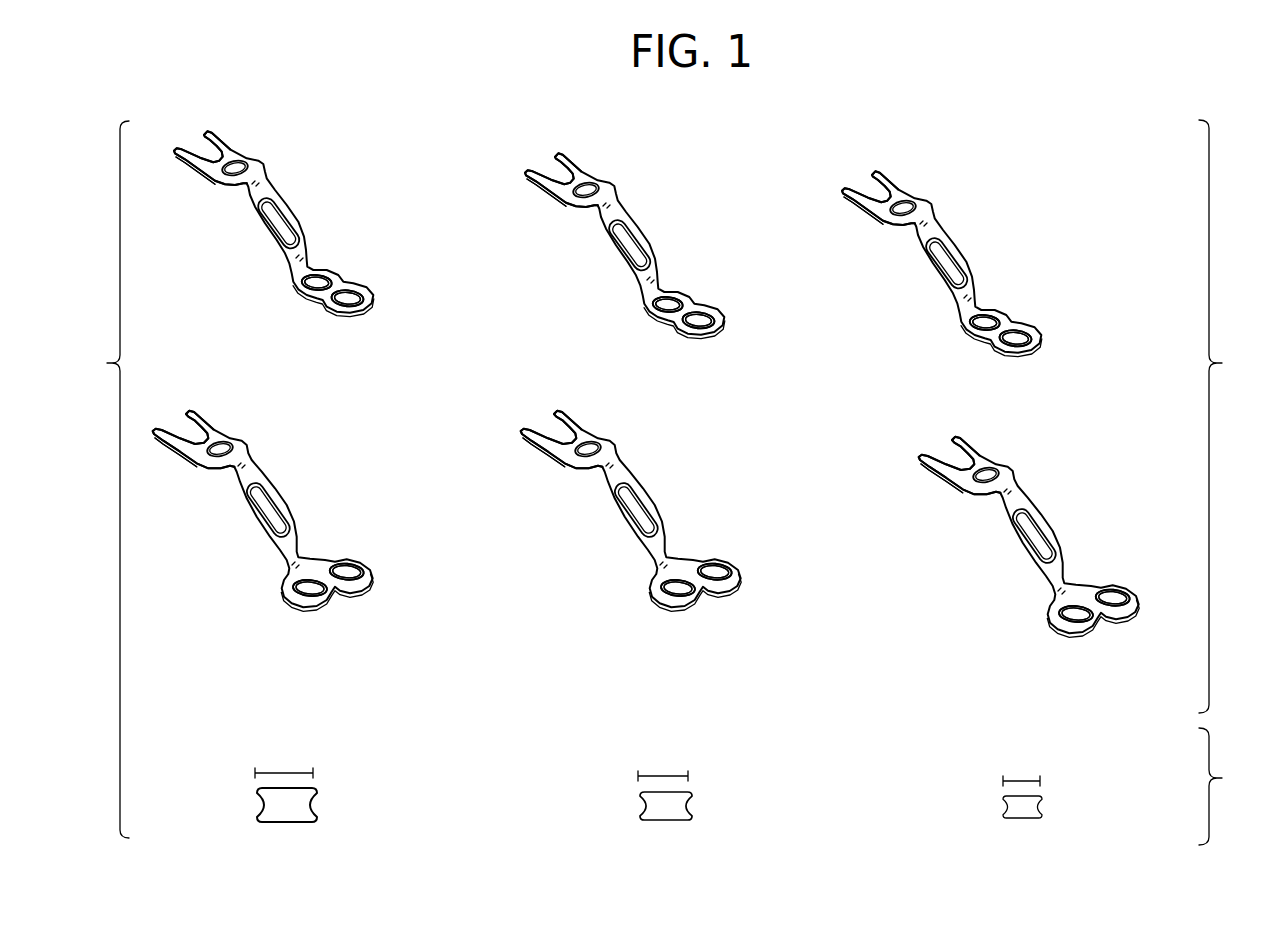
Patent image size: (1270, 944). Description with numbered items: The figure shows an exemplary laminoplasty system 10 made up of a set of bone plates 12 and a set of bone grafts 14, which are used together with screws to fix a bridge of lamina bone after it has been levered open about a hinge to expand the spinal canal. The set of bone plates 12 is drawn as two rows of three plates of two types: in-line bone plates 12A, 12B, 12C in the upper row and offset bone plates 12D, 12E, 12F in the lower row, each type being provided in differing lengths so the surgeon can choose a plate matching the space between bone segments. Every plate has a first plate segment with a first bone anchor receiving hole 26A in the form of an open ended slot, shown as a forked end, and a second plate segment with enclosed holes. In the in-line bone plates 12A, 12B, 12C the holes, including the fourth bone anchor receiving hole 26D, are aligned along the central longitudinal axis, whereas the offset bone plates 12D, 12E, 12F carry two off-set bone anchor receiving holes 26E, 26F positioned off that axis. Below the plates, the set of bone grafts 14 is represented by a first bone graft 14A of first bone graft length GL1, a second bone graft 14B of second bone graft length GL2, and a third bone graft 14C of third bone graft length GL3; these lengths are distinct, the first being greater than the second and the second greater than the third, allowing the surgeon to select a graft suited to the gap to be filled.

The laminoplasty system 10 is at (103, 479).
The set of bone plates 12 is at (1232, 416).
The set of bone grafts 14 is at (1232, 786).
The in-line bone plate 12A is at (344, 207).
The in-line bone plate 12B is at (661, 233).
The in-line bone plate 12C is at (1011, 246).
The offset bone plate 12D is at (353, 455).
The offset bone plate 12E is at (685, 460).
The offset bone plate 12F is at (1110, 491).
The first bone anchor receiving hole 26A is at (200, 147).
The fourth bone anchor receiving hole 26D is at (353, 297).
The off-set bone anchor receiving hole 26E is at (312, 590).
The off-set bone anchor receiving hole 26F is at (352, 572).
The first bone graft length GL1 is at (281, 773).
The second bone graft length GL2 is at (651, 776).
The third bone graft length GL3 is at (1019, 781).
The first bone graft 14A is at (311, 802).
The second bone graft 14B is at (686, 804).
The third bone graft 14C is at (1037, 805).